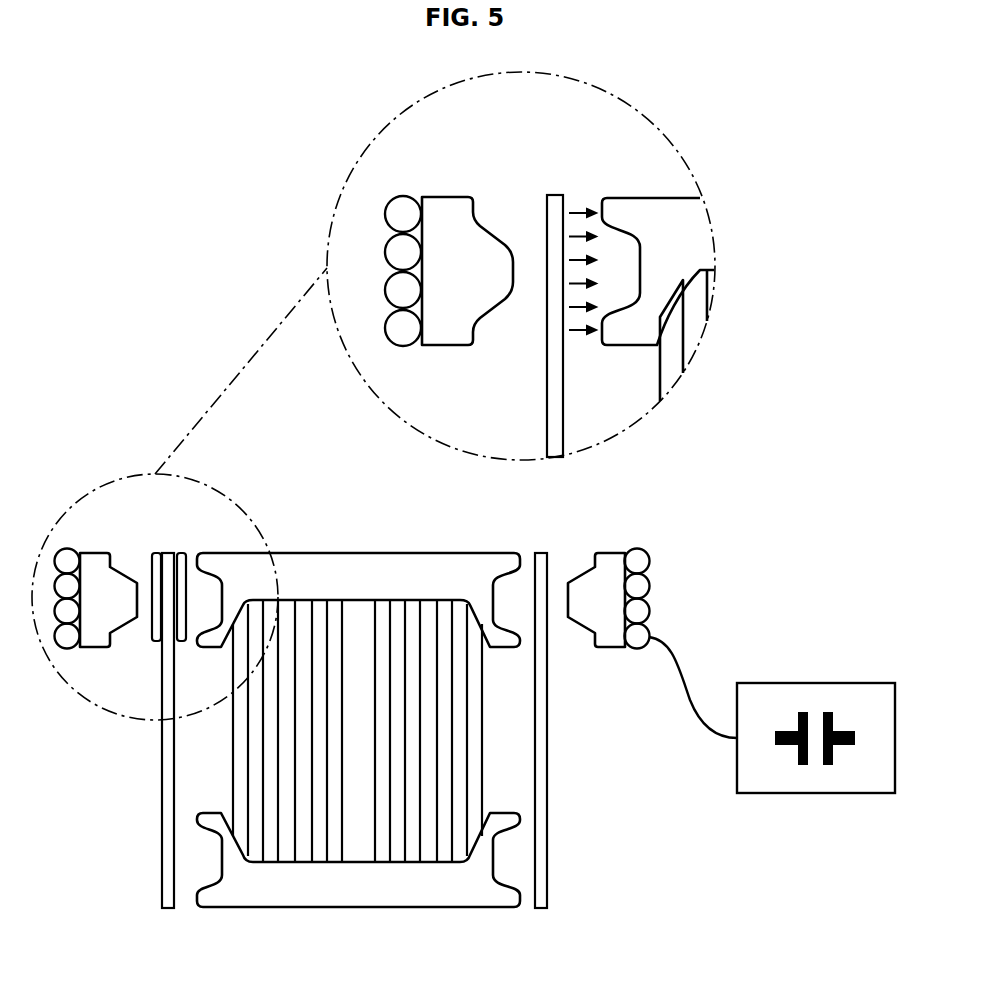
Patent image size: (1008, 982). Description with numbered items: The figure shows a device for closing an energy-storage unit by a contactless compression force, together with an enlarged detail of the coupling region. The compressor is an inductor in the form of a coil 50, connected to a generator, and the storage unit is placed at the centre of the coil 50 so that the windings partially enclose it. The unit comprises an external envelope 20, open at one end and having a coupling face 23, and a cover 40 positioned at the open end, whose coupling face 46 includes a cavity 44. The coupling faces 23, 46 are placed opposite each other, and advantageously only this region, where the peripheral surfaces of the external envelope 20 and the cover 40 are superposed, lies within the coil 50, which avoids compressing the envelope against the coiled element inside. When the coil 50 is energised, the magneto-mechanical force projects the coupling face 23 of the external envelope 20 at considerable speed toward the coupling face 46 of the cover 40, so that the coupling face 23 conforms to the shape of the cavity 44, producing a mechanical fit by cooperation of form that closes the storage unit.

The external envelope 20 is at (553, 387).
The coupling face 23 is at (145, 598).
The cover 40 is at (662, 211).
The cavity 44 is at (655, 268).
The coupling face 46 is at (192, 598).
The coil 50 is at (399, 212).